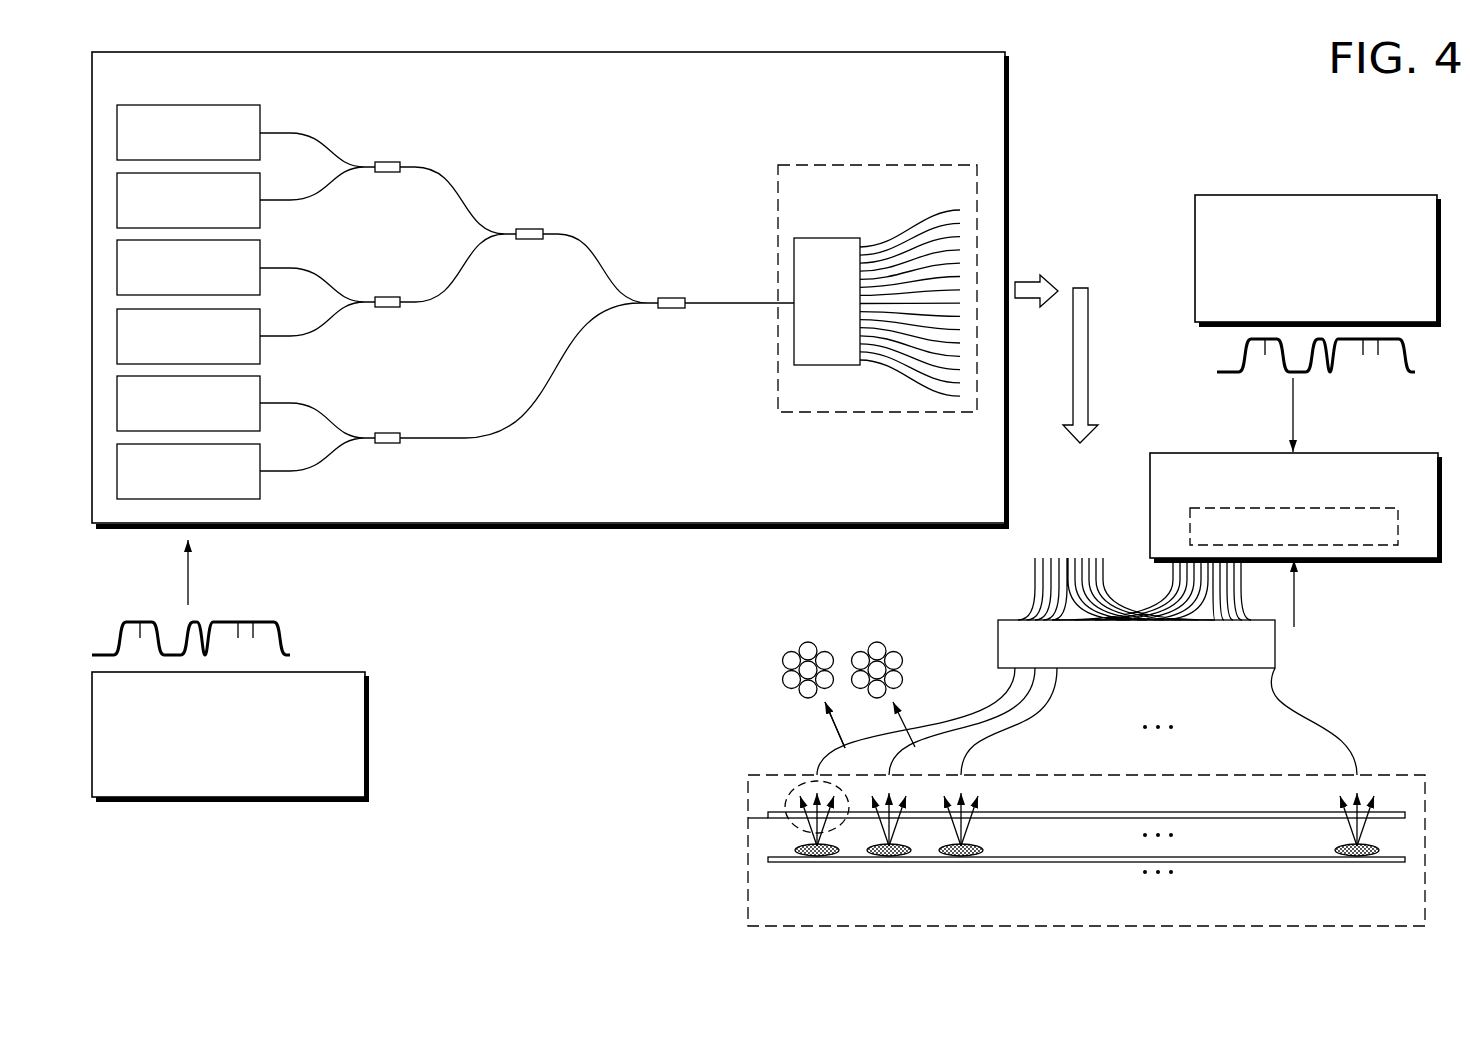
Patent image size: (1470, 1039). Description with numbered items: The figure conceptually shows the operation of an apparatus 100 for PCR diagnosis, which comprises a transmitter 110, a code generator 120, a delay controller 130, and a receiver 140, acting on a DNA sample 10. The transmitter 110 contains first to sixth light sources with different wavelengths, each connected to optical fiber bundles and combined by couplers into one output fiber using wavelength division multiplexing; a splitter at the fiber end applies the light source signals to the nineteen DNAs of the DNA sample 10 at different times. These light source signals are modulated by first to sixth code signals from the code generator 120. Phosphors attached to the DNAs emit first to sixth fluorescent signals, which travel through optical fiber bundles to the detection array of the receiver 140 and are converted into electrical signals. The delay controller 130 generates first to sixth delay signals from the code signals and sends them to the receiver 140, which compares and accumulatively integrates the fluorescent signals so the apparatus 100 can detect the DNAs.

The apparatus 100 is at (1433, 139).
The transmitter 110 is at (550, 290).
The code generator 120 is at (230, 671).
The delay controller 130 is at (1318, 323).
The receiver 140 is at (1220, 560).
The DNA sample 10 is at (1086, 850).